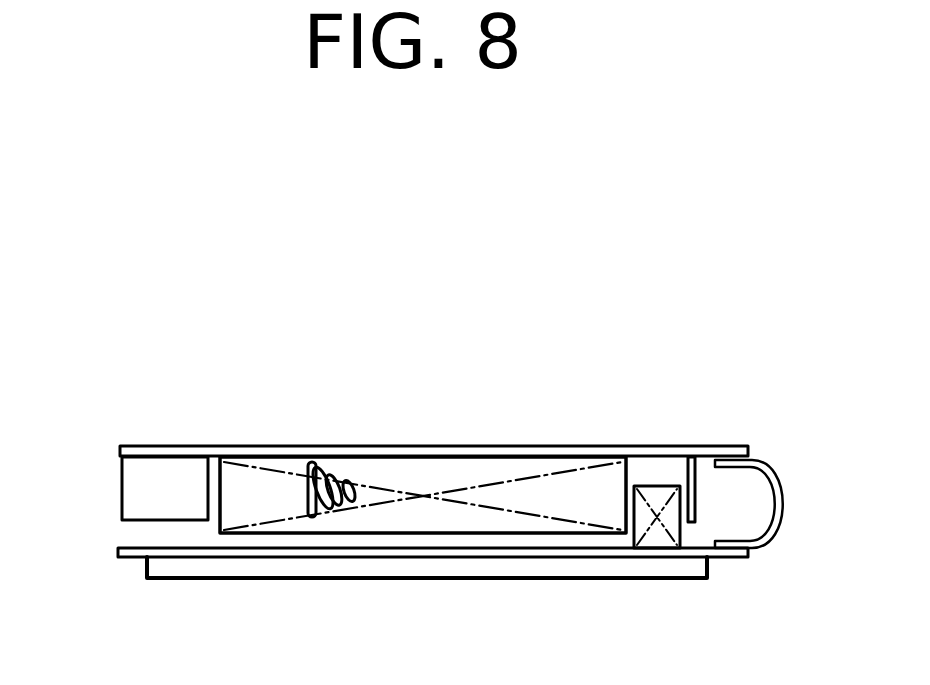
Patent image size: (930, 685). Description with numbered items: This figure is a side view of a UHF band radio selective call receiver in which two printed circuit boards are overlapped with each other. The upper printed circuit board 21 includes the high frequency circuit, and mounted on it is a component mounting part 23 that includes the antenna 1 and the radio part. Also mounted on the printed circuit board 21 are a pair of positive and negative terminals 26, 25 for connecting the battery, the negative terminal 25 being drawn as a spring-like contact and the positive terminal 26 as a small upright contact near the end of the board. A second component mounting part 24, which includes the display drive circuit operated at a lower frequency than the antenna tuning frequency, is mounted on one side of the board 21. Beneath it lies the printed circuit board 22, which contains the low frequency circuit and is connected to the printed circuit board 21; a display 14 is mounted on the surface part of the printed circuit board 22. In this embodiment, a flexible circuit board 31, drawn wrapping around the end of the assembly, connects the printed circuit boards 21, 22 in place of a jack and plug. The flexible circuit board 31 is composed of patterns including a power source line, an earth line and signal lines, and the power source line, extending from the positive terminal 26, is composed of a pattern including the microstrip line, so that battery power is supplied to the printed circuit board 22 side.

The antenna 1 is at (137, 487).
The display 14 is at (580, 571).
The printed circuit board 21 is at (488, 447).
The printed circuit board 22 is at (131, 558).
The component mounting part 23 is at (422, 518).
The component mounting part 24 is at (655, 547).
The negative terminal 25 is at (358, 468).
The positive terminal 26 is at (685, 466).
The flexible circuit board 31 is at (785, 493).